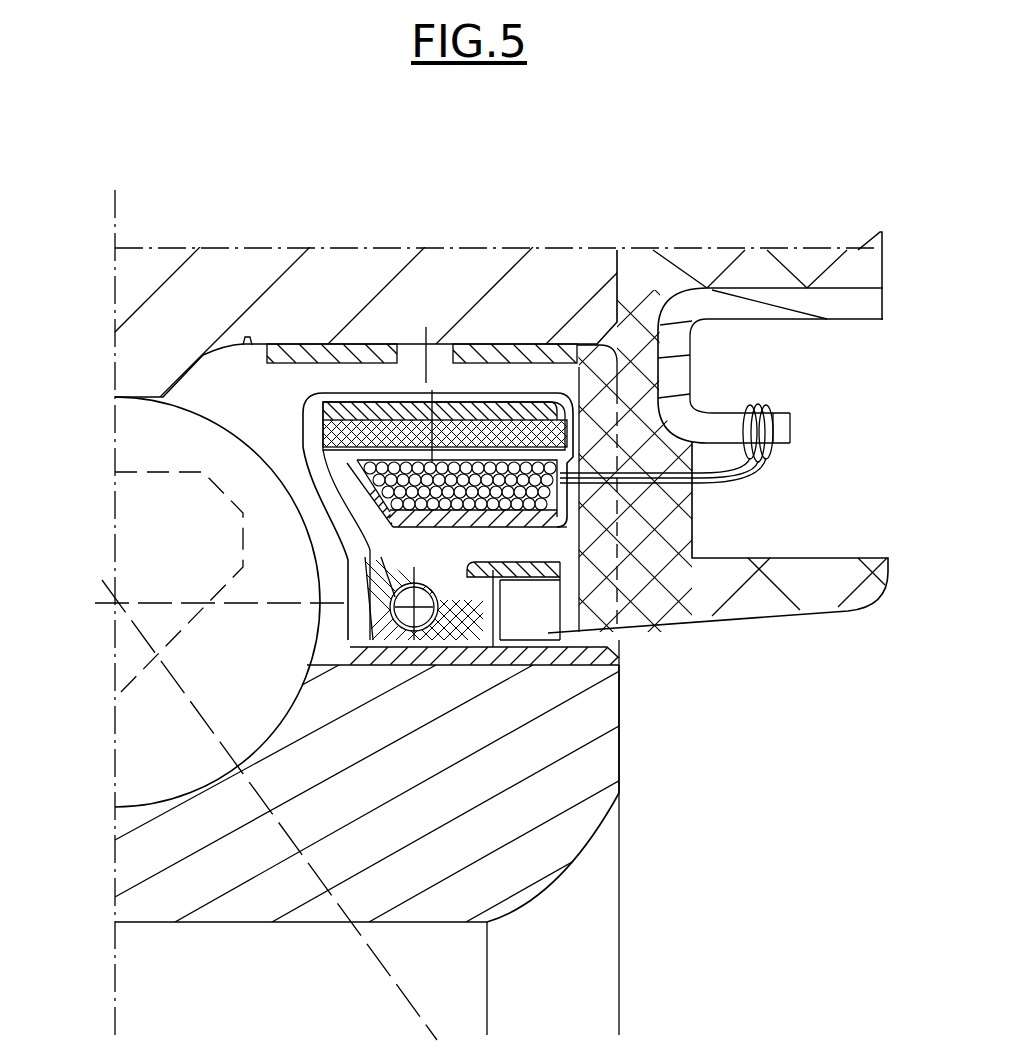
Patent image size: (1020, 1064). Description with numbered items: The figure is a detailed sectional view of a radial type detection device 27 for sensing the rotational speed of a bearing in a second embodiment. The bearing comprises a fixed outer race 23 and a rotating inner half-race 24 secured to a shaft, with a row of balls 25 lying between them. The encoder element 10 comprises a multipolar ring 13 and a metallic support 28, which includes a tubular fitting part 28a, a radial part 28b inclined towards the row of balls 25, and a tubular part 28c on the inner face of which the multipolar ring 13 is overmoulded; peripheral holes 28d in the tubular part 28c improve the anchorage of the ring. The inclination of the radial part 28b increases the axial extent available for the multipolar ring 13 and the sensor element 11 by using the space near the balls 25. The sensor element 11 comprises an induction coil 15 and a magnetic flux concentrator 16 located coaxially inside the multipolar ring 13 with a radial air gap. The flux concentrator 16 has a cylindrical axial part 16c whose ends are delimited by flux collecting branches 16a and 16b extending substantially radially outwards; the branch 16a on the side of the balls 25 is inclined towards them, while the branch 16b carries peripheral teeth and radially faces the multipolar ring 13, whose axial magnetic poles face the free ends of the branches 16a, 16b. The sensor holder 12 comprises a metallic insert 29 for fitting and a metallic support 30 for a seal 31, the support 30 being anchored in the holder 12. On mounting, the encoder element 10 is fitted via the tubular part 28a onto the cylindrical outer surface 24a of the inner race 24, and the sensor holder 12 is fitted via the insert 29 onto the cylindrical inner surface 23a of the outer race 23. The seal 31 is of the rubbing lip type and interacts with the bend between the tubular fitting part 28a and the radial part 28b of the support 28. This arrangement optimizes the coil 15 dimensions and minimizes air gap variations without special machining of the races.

The encoder element 10 is at (305, 411).
The sensor element 11 is at (522, 533).
The sensor holder 12 is at (803, 587).
The multipolar ring 13 is at (386, 417).
The induction coil 15 is at (473, 477).
The magnetic flux concentrator 16 is at (583, 540).
The flux collecting branch 16a is at (360, 480).
The flux collecting branch 16b is at (618, 438).
The cylindrical axial part 16c is at (485, 520).
The fixed outer race 23 is at (187, 287).
The cylindrical inner surface 23a is at (252, 343).
The rotating inner half-race 24 is at (192, 877).
The cylindrical outer surface 24a is at (347, 630).
The balls 25 is at (155, 745).
The detection device 27 is at (742, 644).
The metallic support 28 is at (345, 553).
The tubular fitting part 28a is at (593, 658).
The radial part 28b is at (340, 507).
The tubular part 28c is at (348, 413).
The peripheral holes 28d is at (415, 412).
The metallic insert 29 is at (542, 355).
The metallic support 30 is at (498, 580).
The seal 31 is at (345, 616).